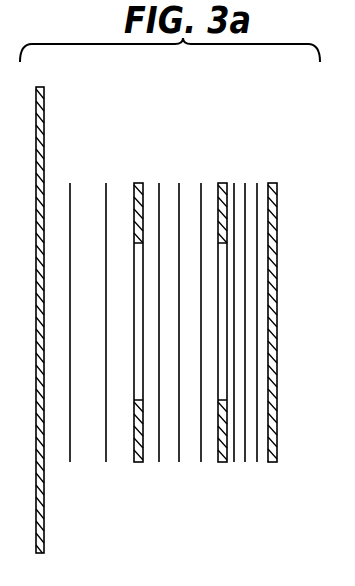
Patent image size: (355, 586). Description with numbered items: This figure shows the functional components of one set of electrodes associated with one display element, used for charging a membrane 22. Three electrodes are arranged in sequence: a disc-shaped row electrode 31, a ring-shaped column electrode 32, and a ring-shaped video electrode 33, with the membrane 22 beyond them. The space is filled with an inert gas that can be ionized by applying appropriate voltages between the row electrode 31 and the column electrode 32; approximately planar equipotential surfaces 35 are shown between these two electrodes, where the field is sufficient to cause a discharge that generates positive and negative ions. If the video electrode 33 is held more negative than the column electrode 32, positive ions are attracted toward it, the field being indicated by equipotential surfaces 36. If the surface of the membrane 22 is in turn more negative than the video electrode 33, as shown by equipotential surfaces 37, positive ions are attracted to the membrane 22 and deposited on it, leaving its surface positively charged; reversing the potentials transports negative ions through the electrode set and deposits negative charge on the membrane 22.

The membrane 22 is at (43, 87).
The row electrode 31 is at (272, 183).
The column electrode 32 is at (222, 183).
The video electrode 33 is at (138, 183).
The equipotential surfaces 35 is at (229, 182).
The equipotential surfaces 36 is at (204, 181).
The equipotential surfaces 37 is at (106, 177).